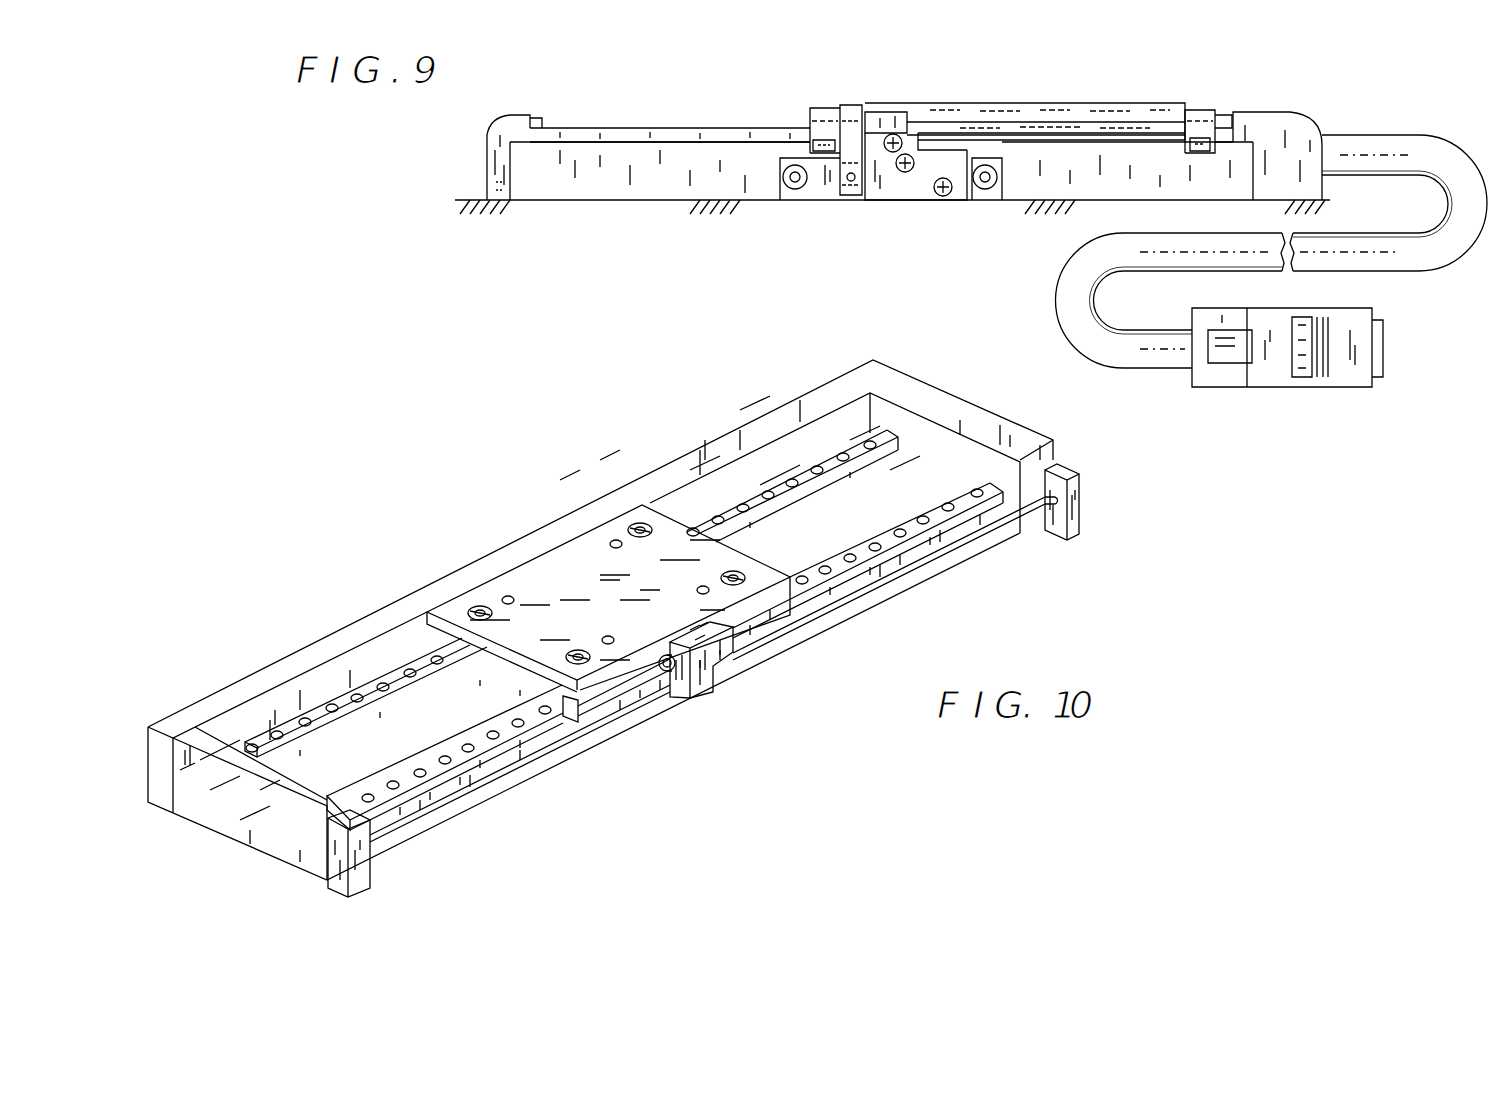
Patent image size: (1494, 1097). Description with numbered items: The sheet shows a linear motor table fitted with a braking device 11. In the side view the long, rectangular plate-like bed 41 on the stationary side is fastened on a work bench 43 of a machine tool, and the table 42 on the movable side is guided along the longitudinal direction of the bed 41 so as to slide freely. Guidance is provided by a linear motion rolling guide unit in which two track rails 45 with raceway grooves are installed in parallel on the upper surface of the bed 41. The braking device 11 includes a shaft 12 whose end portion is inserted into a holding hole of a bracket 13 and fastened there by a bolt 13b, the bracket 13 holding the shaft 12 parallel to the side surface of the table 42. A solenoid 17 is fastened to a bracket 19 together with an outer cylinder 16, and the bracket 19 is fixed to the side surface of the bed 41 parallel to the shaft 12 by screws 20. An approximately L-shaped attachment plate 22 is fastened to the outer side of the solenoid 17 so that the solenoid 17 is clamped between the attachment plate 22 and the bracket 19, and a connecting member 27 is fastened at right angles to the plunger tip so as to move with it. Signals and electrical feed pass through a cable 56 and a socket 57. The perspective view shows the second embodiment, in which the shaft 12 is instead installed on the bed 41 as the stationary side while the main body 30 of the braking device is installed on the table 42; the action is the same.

In FIG. 9, the braking device 11 is at (1011, 145).
In FIG. 10, the braking device 11 is at (662, 706).
In FIG. 9, the shaft 12 is at (1156, 128).
In FIG. 10, the shaft 12 is at (520, 765).
In FIG. 9, the bracket 13 is at (826, 108).
In FIG. 10, the bracket 13 is at (370, 876).
In FIG. 9, the bolt 13b is at (821, 146).
In FIG. 9, the outer cylinder 16 is at (895, 115).
In FIG. 9, the solenoid 17 is at (955, 150).
In FIG. 9, the bracket 19 is at (815, 196).
In FIG. 10, the bracket 19 is at (570, 709).
In FIG. 9, the screws 20 is at (791, 190).
In FIG. 9, the attachment plate 22 is at (910, 195).
In FIG. 9, the connecting member 27 is at (851, 196).
In FIG. 10, the main body of the braking device 30 is at (706, 684).
In FIG. 9, the bed 41 is at (683, 130).
In FIG. 10, the bed 41 is at (457, 826).
In FIG. 9, the table 42 is at (1107, 104).
In FIG. 10, the table 42 is at (528, 590).
In FIG. 9, the work bench 43 is at (648, 251).
In FIG. 9, the track rails 45 is at (601, 130).
In FIG. 10, the track rails 45 is at (375, 786).
In FIG. 9, the cable 56 is at (1128, 368).
In FIG. 9, the socket 57 is at (1257, 394).